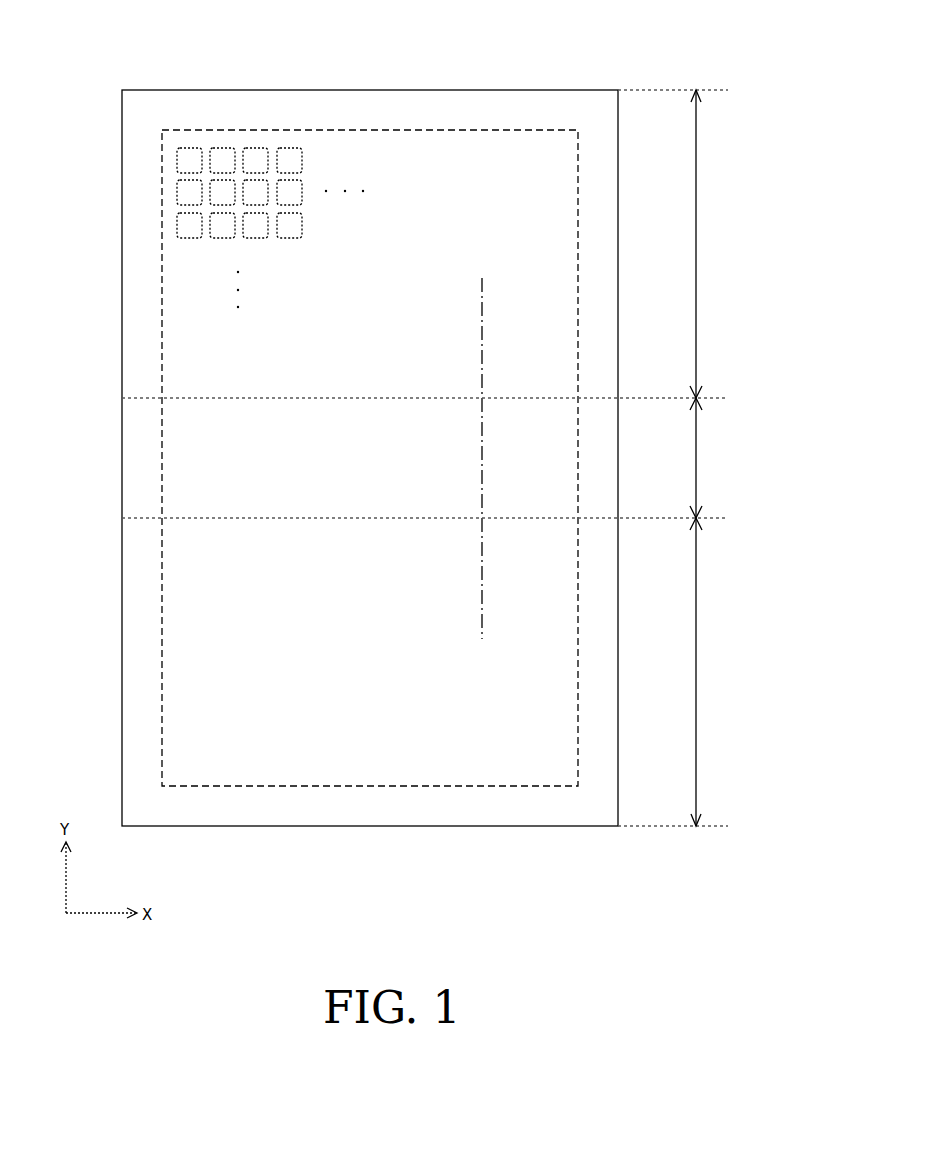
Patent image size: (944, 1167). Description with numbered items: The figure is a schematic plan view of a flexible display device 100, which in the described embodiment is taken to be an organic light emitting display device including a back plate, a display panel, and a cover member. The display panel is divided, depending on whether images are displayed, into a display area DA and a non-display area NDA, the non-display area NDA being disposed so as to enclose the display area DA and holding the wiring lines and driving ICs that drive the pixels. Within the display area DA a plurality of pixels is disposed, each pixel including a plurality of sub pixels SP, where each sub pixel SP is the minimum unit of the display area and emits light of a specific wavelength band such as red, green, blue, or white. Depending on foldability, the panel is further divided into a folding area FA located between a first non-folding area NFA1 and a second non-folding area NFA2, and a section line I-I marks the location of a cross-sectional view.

The flexible display device 100 is at (605, 27).
The sub pixel SP is at (184, 148).
The display area DA is at (192, 310).
The non-display area NDA is at (143, 357).
The non-folding area NFA1 is at (719, 250).
The folding area FA is at (707, 464).
The non-folding area NFA2 is at (719, 672).
The section line I-I' I is at (482, 278).